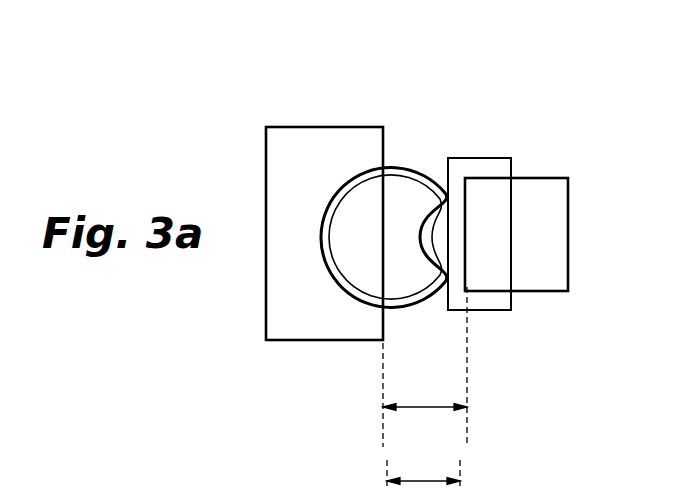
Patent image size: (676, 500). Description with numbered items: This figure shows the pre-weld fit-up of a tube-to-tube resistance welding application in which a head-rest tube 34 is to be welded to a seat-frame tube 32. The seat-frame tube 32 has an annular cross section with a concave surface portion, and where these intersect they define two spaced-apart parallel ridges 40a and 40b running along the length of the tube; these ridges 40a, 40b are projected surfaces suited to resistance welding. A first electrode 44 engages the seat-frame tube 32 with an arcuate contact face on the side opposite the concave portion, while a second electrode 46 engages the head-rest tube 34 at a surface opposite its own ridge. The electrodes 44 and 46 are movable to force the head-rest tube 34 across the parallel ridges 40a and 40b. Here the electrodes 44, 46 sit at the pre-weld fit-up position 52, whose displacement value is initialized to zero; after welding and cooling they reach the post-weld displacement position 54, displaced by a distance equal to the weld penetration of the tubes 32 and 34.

The seat-frame tube 32 is at (398, 166).
The head-rest tube 34 is at (476, 158).
The parallel ridge 40a is at (446, 193).
The parallel ridge 40b is at (445, 277).
The first electrode 44 is at (304, 127).
The second electrode 46 is at (548, 193).
The pre-weld fit-up position 52 is at (426, 407).
The post-weld displacement position 54 is at (425, 481).